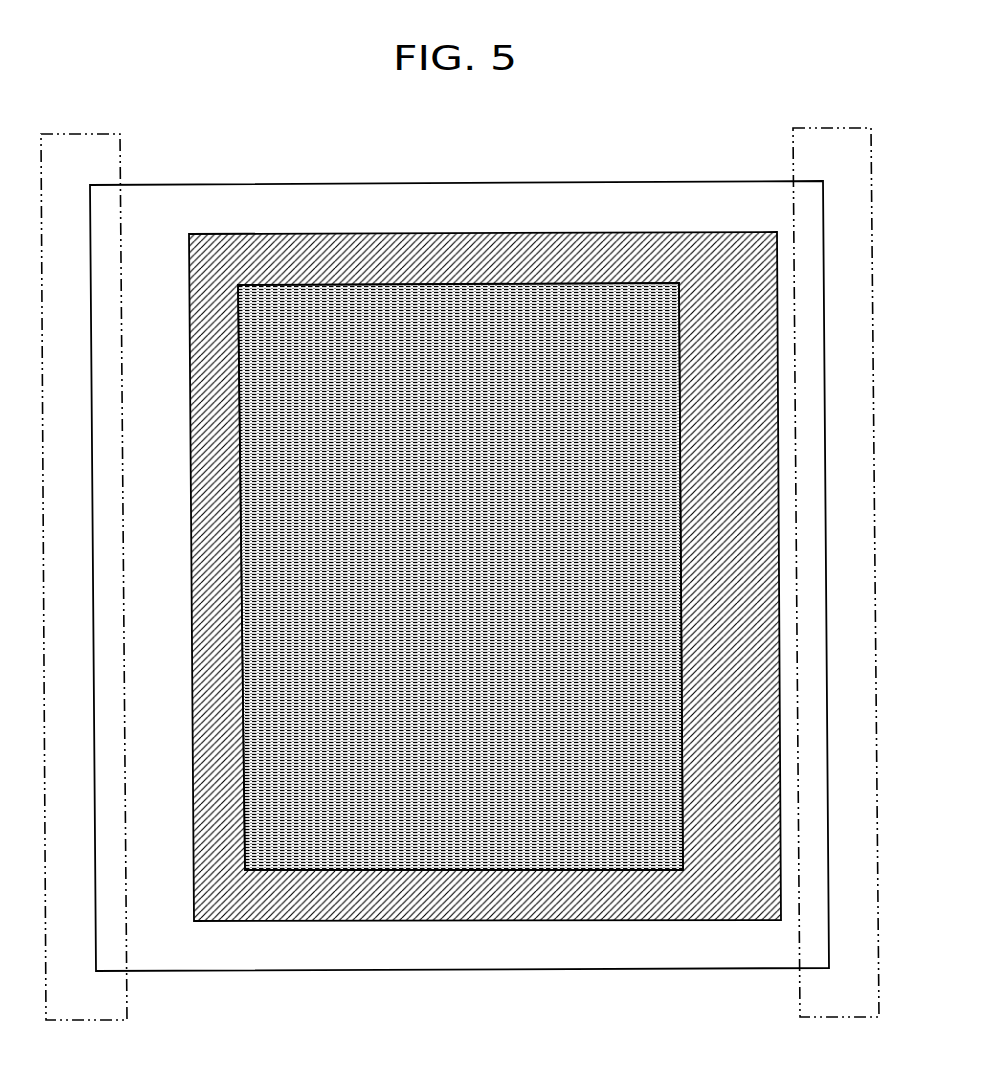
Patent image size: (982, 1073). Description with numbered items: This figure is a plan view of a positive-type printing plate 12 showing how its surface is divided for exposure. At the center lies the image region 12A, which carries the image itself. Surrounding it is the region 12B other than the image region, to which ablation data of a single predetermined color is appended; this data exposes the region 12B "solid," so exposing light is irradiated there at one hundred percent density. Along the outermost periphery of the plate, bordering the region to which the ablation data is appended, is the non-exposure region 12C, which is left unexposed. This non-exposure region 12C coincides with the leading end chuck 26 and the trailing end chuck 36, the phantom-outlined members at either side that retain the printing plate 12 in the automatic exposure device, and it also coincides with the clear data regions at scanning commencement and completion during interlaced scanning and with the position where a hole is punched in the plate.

The printing plate 12 is at (600, 177).
The image region 12A is at (493, 307).
The region other than the image region 12B is at (315, 243).
The non-exposure region 12C is at (268, 200).
The leading end chuck 26 is at (121, 133).
The trailing end chuck 36 is at (797, 128).